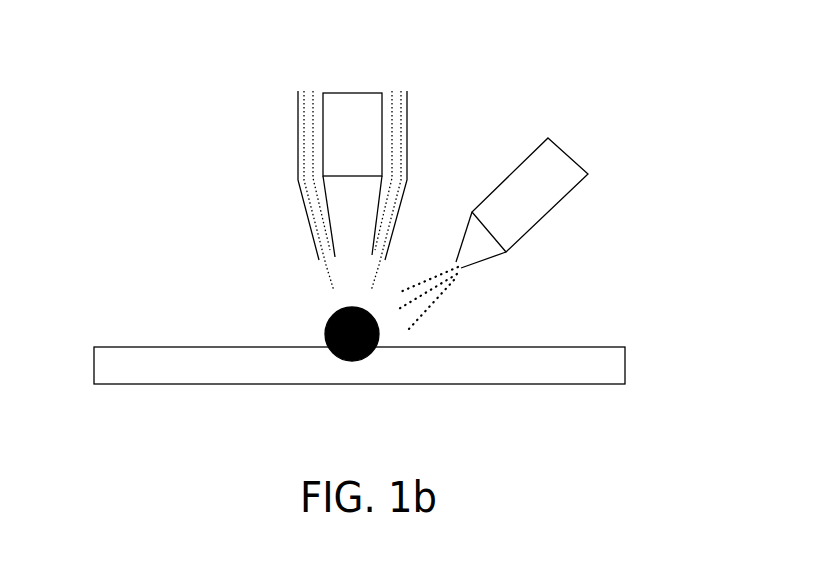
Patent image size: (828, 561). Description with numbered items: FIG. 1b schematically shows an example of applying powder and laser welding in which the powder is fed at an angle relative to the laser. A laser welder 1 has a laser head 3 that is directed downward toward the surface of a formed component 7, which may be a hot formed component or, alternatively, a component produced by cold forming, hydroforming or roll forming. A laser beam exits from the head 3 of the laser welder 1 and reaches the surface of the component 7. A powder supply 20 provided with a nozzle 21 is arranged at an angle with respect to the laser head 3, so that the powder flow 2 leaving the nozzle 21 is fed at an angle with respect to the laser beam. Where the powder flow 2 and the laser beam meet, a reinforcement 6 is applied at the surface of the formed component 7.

The laser welder 1 is at (339, 98).
The laser head 3 is at (338, 217).
The powder supply 20 is at (580, 157).
The nozzle 21 is at (487, 257).
The powder flow 2 is at (438, 300).
The reinforcement 6 is at (326, 323).
The formed component 7 is at (598, 360).